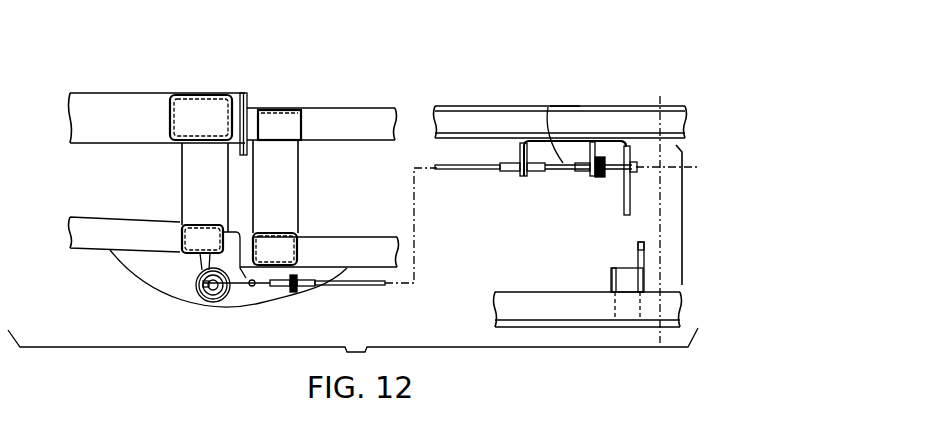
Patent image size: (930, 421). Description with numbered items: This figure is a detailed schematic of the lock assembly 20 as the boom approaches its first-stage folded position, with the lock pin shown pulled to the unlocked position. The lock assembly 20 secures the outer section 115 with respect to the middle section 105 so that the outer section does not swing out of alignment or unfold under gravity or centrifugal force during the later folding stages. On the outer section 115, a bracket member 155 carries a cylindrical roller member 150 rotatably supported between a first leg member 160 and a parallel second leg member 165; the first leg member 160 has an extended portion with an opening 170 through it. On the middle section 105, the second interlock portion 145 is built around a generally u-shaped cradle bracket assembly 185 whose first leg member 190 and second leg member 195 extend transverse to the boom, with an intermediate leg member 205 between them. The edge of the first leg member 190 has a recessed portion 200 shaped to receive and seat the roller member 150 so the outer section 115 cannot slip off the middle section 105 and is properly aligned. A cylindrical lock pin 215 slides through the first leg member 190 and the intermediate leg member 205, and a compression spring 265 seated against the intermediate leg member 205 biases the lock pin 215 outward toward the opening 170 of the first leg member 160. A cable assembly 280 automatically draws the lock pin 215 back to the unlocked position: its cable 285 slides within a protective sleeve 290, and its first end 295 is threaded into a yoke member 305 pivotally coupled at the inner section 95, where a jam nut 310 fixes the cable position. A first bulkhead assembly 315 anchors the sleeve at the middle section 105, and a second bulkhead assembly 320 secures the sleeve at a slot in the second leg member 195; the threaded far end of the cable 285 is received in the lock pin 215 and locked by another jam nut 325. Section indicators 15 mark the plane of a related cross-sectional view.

The inner section 95 is at (122, 90).
The middle section 105 is at (318, 100).
The jam nut 325 is at (567, 97).
The cable assembly 280 is at (400, 192).
The first end 295 is at (262, 275).
The cable 285 is at (242, 289).
The first bulkhead assembly 315 is at (302, 296).
The protective sleeve 290 is at (368, 290).
The yoke member 305 is at (209, 291).
The jam nut 310 is at (233, 288).
The second interlock portion 145 is at (525, 200).
The second bulkhead assembly 320 is at (511, 181).
The second leg member 195 is at (520, 153).
The cradle bracket assembly 185 is at (537, 135).
The lock pin 215 is at (623, 146).
The intermediate leg member 205 is at (592, 175).
The spring 265 is at (595, 182).
The first leg member 190 is at (626, 205).
The recessed portion 200 is at (638, 183).
The lock assembly 20 is at (684, 205).
The section line 15 is at (660, 96).
The outer section 115 is at (541, 330).
The first leg member 160 is at (650, 290).
The roller member 150 is at (610, 286).
The second leg member 165 is at (638, 252).
The opening 170 is at (656, 247).
The bracket member 155 is at (656, 290).